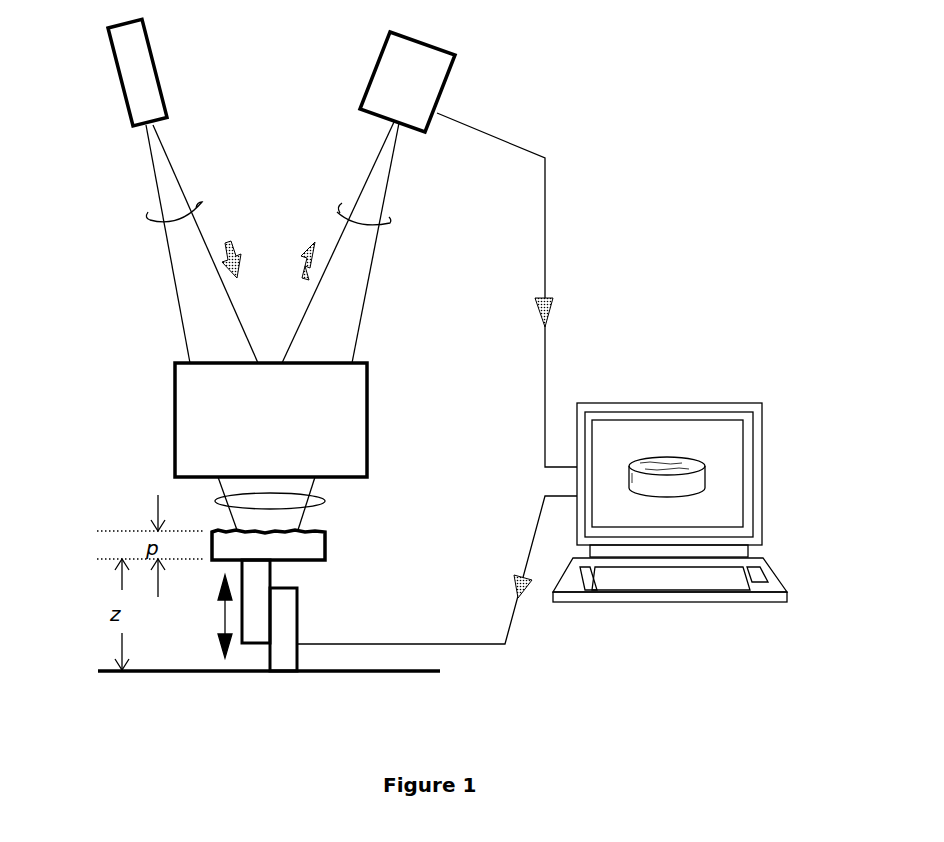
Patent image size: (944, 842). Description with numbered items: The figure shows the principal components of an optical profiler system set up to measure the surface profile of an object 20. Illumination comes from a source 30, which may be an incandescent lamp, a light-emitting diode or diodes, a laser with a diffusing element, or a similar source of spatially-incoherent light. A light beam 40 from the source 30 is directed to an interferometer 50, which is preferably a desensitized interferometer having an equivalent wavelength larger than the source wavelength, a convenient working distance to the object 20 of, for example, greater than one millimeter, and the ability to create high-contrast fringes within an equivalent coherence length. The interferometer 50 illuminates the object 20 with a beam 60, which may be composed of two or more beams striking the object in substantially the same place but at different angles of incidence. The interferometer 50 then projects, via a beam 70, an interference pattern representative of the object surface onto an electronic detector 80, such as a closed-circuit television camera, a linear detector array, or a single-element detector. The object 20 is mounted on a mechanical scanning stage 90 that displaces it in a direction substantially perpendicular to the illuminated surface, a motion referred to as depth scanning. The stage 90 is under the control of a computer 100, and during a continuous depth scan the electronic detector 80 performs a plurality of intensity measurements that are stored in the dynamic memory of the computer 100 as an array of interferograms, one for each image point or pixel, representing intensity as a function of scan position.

The object 20 is at (326, 548).
The source 30 is at (114, 72).
The light beam 40 is at (148, 222).
The interferometer 50 is at (423, 82).
The beam 60 is at (325, 500).
The beam 70 is at (395, 228).
The electronic detector 80 is at (172, 455).
The mechanical scanning stage 90 is at (271, 572).
The computer 100 is at (767, 469).